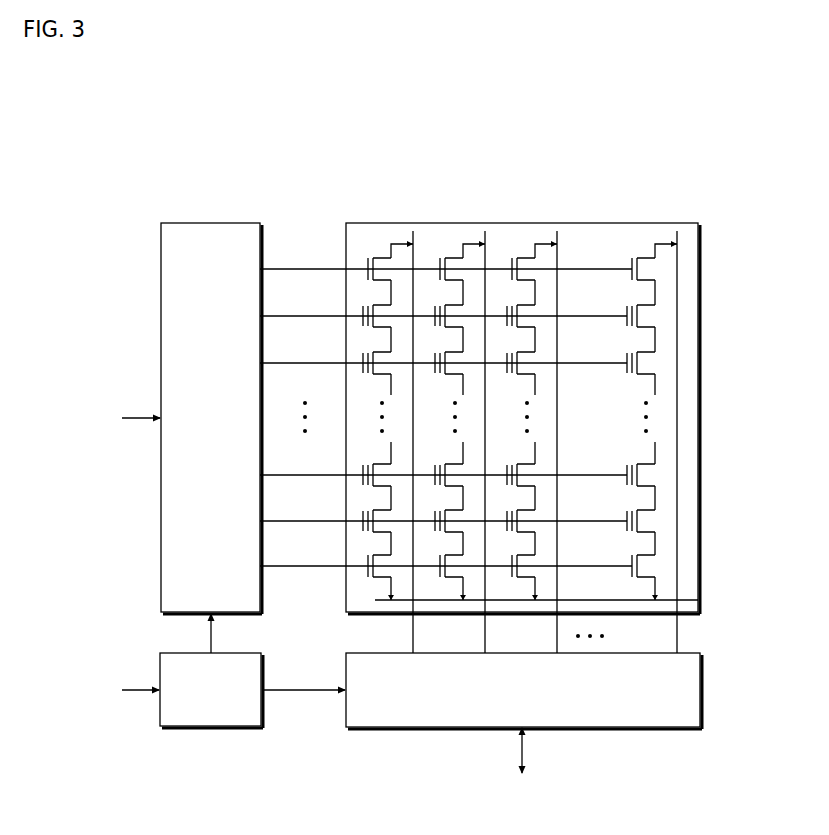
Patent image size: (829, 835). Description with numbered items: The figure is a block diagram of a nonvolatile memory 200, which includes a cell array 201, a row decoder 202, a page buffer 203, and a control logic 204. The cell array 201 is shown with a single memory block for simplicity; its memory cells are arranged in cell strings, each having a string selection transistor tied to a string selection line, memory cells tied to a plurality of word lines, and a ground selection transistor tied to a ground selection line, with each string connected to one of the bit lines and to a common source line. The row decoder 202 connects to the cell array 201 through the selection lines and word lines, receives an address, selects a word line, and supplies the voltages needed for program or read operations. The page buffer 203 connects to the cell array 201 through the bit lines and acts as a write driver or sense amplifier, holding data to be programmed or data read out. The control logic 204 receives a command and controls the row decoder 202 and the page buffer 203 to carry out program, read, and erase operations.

The nonvolatile memory 200 is at (578, 138).
The cell array 201 is at (618, 223).
The row decoder 202 is at (229, 222).
The page buffer 203 is at (704, 686).
The control logic 204 is at (225, 727).